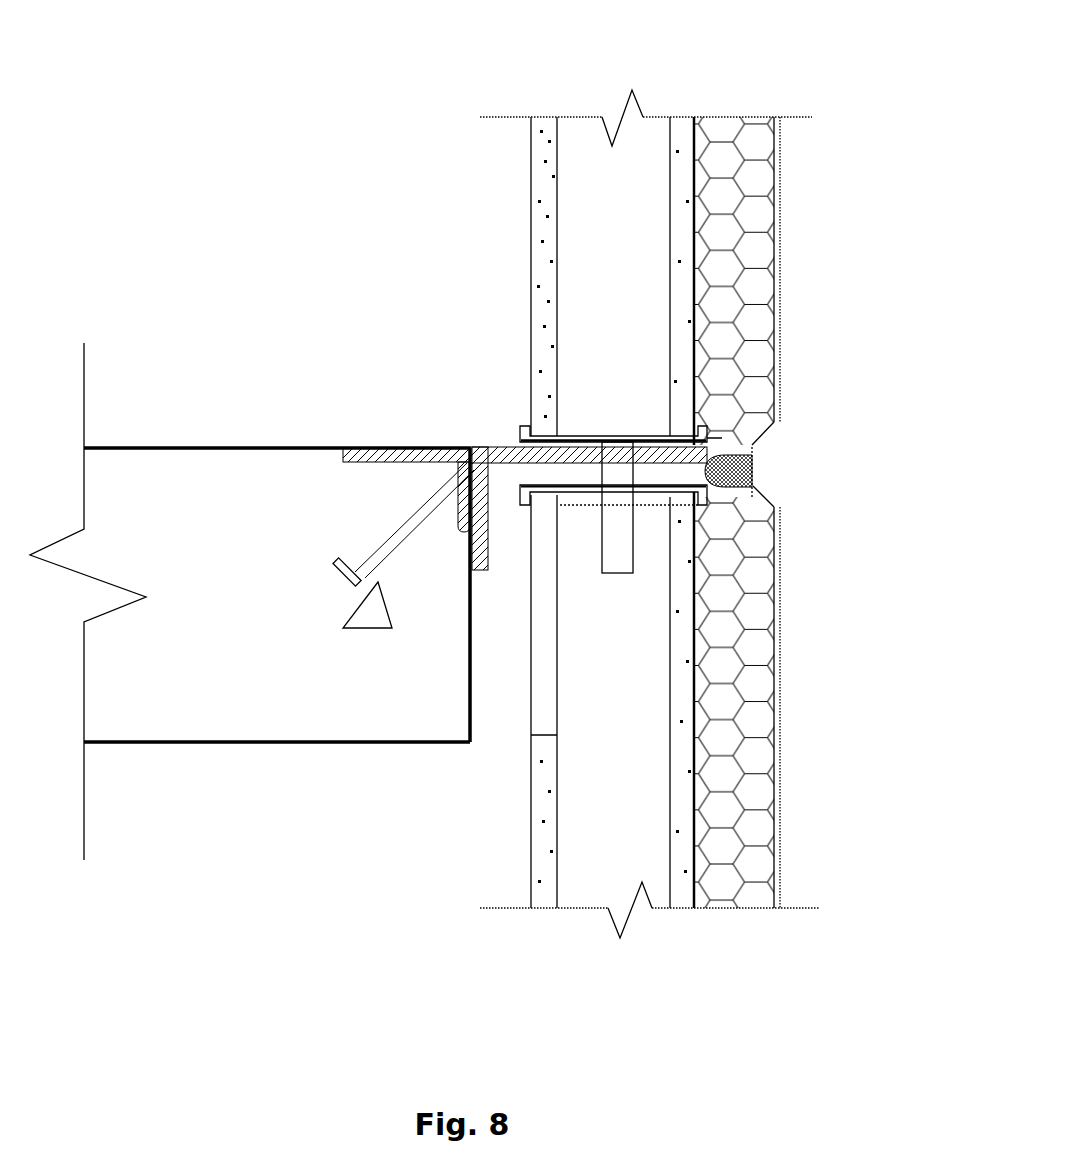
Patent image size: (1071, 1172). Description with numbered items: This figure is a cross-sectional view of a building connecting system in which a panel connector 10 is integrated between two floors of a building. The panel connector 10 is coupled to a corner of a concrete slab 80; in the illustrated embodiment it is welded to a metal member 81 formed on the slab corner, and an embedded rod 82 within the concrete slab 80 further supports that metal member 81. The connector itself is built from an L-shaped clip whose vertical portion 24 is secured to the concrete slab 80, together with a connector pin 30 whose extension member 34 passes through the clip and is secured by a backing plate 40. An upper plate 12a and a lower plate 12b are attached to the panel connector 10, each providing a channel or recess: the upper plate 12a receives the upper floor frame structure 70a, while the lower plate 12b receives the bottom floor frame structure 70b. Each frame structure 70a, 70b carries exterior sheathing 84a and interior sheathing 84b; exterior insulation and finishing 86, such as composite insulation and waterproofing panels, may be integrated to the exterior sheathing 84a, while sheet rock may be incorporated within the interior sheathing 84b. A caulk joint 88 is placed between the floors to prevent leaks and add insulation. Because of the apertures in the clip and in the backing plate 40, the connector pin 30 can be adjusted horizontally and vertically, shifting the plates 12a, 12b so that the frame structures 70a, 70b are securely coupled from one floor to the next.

The panel connector 10 is at (493, 450).
The upper plate 12a is at (522, 427).
The lower plate 12b is at (533, 495).
The vertical portion 24 is at (472, 575).
The connector pin 30 is at (690, 442).
The extension member 34 is at (619, 545).
The backing plate 40 is at (647, 507).
The upper floor frame structure 70a is at (603, 150).
The bottom floor frame structure 70b is at (612, 867).
The concrete slab 80 is at (170, 703).
The metal member 81 is at (408, 445).
The embedded rod 82 is at (363, 557).
The exterior sheathing 84a is at (680, 268).
The interior sheathing 84b is at (543, 180).
The exterior insulation and finishing 86 is at (725, 162).
The caulk joint 88 is at (720, 473).